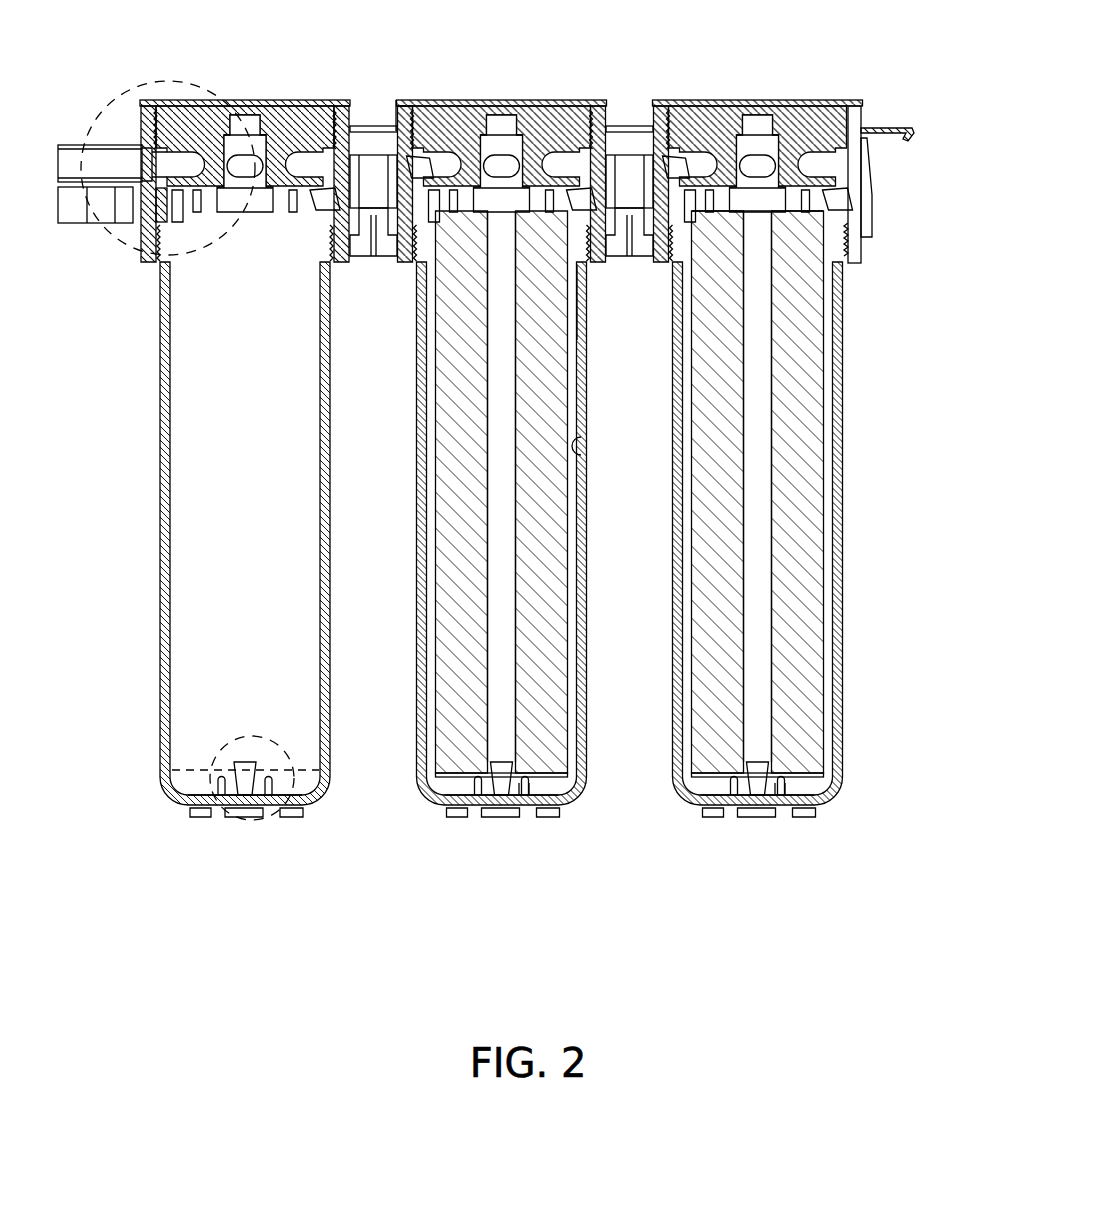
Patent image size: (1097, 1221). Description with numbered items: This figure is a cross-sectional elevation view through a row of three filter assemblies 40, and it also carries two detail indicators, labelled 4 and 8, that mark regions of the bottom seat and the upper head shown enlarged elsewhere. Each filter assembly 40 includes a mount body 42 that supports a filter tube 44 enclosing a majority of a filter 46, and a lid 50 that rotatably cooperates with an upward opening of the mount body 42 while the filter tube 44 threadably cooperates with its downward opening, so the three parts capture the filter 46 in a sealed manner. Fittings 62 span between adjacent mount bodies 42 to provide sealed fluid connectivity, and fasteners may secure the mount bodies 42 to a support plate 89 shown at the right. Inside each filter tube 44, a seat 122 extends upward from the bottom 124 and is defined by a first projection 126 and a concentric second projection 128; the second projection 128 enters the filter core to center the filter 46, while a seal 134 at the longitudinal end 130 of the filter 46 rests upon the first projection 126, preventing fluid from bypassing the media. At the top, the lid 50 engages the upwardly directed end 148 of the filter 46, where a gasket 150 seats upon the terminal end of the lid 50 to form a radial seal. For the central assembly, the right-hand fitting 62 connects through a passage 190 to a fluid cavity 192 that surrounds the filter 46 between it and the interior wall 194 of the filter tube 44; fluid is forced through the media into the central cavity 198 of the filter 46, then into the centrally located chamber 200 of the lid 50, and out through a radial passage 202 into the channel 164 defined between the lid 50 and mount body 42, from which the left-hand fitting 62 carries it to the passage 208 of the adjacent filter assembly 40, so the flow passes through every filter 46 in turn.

The filter assembly 40 is at (304, 58).
The mount body 42 is at (157, 213).
The filter tube 44 is at (160, 460).
The filter 46 is at (543, 420).
The lid 50 is at (248, 106).
The fitting 62 is at (365, 215).
The support plate 89 is at (905, 143).
The seat 122 is at (290, 745).
The bottom 124 is at (303, 817).
The first projection 126 is at (215, 808).
The second projection 128 is at (228, 770).
The longitudinal end 130 is at (458, 795).
The seal 134 is at (530, 814).
The upwardly directed end 148 is at (805, 238).
The gasket 150 is at (873, 202).
The channel 164 is at (400, 106).
The passage 190 is at (577, 188).
The fluid cavity 192 is at (587, 325).
The interior wall 194 is at (585, 455).
The central cavity 198 is at (497, 540).
The chamber 200 is at (758, 200).
The passage 202 is at (507, 165).
The passage 208 is at (317, 188).
The detail view indicator 4 is at (200, 762).
The detail view indicator 8 is at (174, 277).